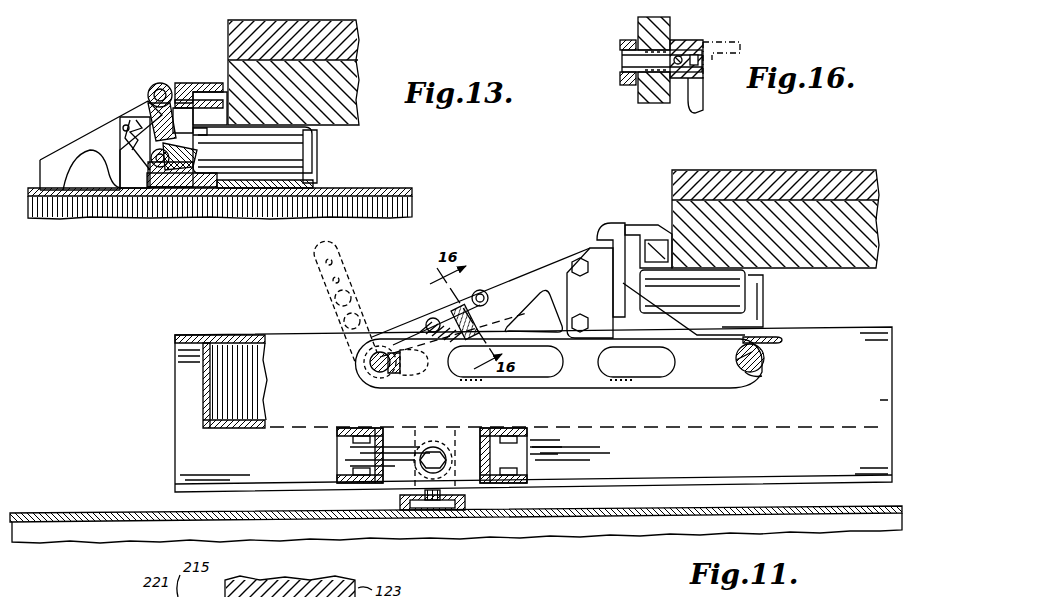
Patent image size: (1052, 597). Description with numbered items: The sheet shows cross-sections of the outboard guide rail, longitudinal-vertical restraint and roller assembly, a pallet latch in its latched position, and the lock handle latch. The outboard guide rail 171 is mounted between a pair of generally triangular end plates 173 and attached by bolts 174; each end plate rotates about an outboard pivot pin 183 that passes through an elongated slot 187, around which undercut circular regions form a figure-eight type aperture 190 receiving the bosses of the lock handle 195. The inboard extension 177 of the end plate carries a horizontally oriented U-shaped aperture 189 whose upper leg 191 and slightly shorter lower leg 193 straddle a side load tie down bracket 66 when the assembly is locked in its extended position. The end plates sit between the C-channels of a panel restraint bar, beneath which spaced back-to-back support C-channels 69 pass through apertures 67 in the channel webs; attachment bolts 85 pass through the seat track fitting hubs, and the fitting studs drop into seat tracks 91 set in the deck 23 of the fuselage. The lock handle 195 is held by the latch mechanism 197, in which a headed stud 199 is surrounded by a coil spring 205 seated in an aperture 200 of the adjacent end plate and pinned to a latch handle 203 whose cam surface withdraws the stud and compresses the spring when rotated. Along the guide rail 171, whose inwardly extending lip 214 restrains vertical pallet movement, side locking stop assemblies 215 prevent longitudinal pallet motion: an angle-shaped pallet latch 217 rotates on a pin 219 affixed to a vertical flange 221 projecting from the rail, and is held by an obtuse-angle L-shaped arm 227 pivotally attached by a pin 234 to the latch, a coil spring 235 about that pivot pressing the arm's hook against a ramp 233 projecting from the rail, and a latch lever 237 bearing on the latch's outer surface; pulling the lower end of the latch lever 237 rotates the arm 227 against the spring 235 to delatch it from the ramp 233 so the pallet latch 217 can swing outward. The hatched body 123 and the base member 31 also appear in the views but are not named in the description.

In FIG. 13, the table top 123 is at (358, 42).
In FIG. 11, the table top 123 is at (755, 208).
In FIG. 13, the frame base 31 is at (360, 188).
In FIG. 11, the frame base 31 is at (230, 398).
In FIG. 13, the side locking stop assembly 215 is at (147, 72).
In FIG. 13, the pallet latch 217 is at (148, 107).
In FIG. 13, the pin 219 is at (162, 90).
In FIG. 13, the vertical flange 221 is at (186, 83).
In FIG. 13, the L-shaped arm 227 is at (75, 165).
In FIG. 13, the ramp 233 is at (180, 175).
In FIG. 13, the pin 234 is at (160, 168).
In FIG. 13, the coil spring 235 is at (150, 165).
In FIG. 13, the latch lever 237 is at (140, 116).
In FIG. 16, the lock handle 195 is at (628, 40).
In FIG. 11, the lock handle 195 is at (483, 290).
In FIG. 16, the latch mechanism 197 is at (746, 43).
In FIG. 11, the latch mechanism 197 is at (482, 288).
In FIG. 16, the stud 199 is at (622, 62).
In FIG. 16, the aperture 200 is at (640, 90).
In FIG. 16, the latch handle 203 is at (703, 42).
In FIG. 16, the coil spring 205 is at (655, 52).
In FIG. 11, the outboard guide rail 171 is at (618, 235).
In FIG. 11, the inwardly extending lip 214 is at (660, 218).
In FIG. 11, the end plates 173 is at (543, 290).
In FIG. 11, the bolts 174 is at (580, 262).
In FIG. 11, the inboard extension 177 is at (730, 380).
In FIG. 11, the outboard pivot pins 183 is at (378, 352).
In FIG. 11, the elongated slot 187 is at (393, 390).
In FIG. 11, the U-shaped aperture 189 is at (734, 356).
In FIG. 11, the FIG.-8 type aperture 190 is at (412, 378).
In FIG. 11, the upper leg 191 is at (768, 337).
In FIG. 11, the lower leg 193 is at (762, 376).
In FIG. 11, the side load tie down brackets 66 is at (766, 360).
In FIG. 11, the spaced apertures 67 is at (548, 457).
In FIG. 11, the support C-channels 69 is at (370, 490).
In FIG. 11, the attachment bolts 85 is at (440, 458).
In FIG. 11, the seat tracks 91 is at (468, 503).
In FIG. 11, the deck 23 is at (112, 512).